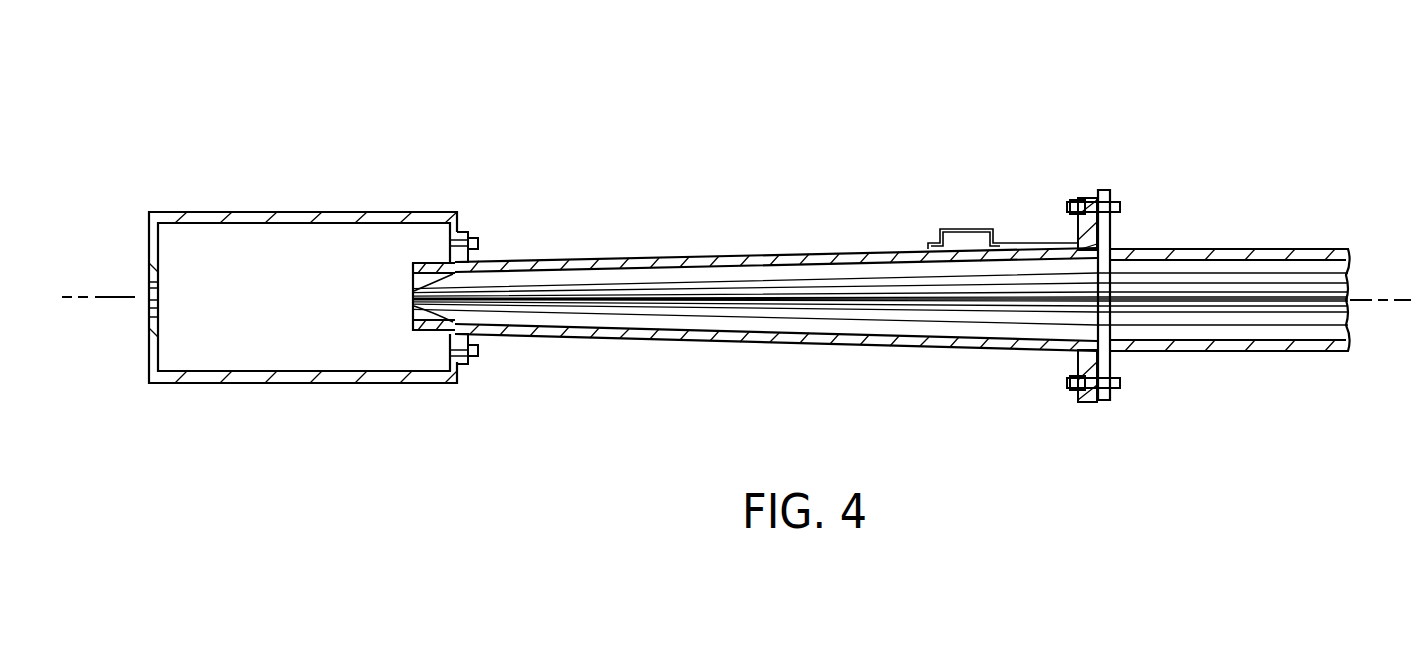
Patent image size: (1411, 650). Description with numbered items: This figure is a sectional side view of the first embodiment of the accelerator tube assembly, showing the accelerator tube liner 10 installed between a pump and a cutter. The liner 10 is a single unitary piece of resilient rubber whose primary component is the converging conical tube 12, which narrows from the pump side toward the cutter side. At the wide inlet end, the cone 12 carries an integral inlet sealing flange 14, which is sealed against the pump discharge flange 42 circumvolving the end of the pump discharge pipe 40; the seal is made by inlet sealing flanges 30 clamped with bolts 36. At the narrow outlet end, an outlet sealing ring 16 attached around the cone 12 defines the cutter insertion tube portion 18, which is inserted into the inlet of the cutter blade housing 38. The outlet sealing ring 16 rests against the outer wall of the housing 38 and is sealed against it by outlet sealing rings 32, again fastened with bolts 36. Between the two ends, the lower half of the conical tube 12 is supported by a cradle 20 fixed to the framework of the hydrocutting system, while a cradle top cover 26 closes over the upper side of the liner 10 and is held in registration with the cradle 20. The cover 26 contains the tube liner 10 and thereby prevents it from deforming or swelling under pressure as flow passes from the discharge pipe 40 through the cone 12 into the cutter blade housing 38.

The accelerator tube liner 10 is at (818, 126).
The converging conical tube 12 is at (641, 311).
The inlet sealing flange 14 is at (1079, 235).
The outlet sealing ring 16 is at (413, 293).
The cutter insertion tube portion 18 is at (413, 318).
The cradle 20 is at (658, 341).
The cradle top cover 26 is at (665, 251).
The inlet sealing flanges 30 is at (1086, 200).
The outlet sealing rings 32 is at (464, 232).
The bolts 36 is at (480, 244).
The cutter blade housing 38 is at (303, 212).
The pump discharge pipe 40 is at (1210, 249).
The pump discharge flange 42 is at (1110, 232).